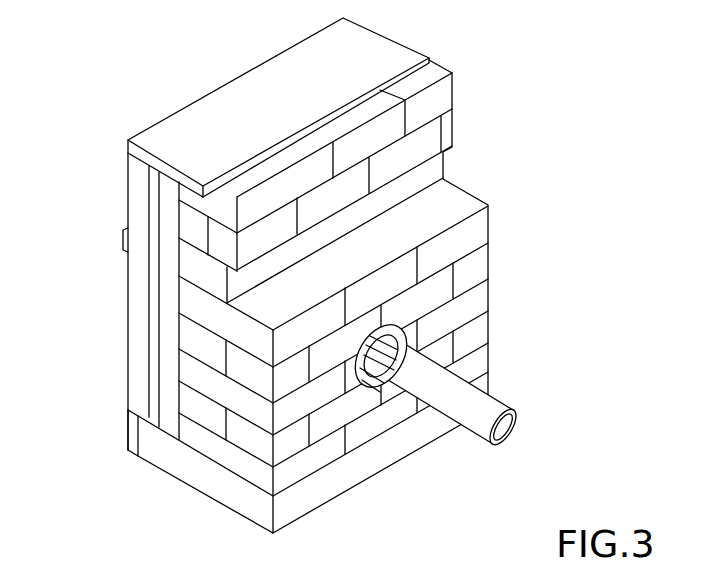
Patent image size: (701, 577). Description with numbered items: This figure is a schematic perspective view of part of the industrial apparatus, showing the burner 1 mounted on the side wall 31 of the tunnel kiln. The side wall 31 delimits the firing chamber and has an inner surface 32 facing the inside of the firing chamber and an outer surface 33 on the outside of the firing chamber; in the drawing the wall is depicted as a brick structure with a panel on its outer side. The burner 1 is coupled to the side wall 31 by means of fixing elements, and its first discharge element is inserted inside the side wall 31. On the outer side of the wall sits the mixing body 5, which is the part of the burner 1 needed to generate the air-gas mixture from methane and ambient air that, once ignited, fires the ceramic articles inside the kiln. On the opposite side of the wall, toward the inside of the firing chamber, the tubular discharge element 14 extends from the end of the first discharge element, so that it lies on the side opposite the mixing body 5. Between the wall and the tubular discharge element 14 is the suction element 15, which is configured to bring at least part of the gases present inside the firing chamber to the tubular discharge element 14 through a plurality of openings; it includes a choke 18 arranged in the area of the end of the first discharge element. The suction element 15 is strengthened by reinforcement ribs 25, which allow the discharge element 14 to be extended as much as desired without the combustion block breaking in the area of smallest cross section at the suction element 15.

The burner 1 is at (319, 288).
The mixing body 5 is at (124, 236).
The tubular discharge element 14 is at (478, 427).
The suction element 15 is at (412, 344).
The choke 18 is at (360, 372).
The reinforcement ribs 25 is at (395, 330).
The side wall 31 is at (185, 366).
The inner surface 32 is at (334, 466).
The outer surface 33 is at (130, 190).